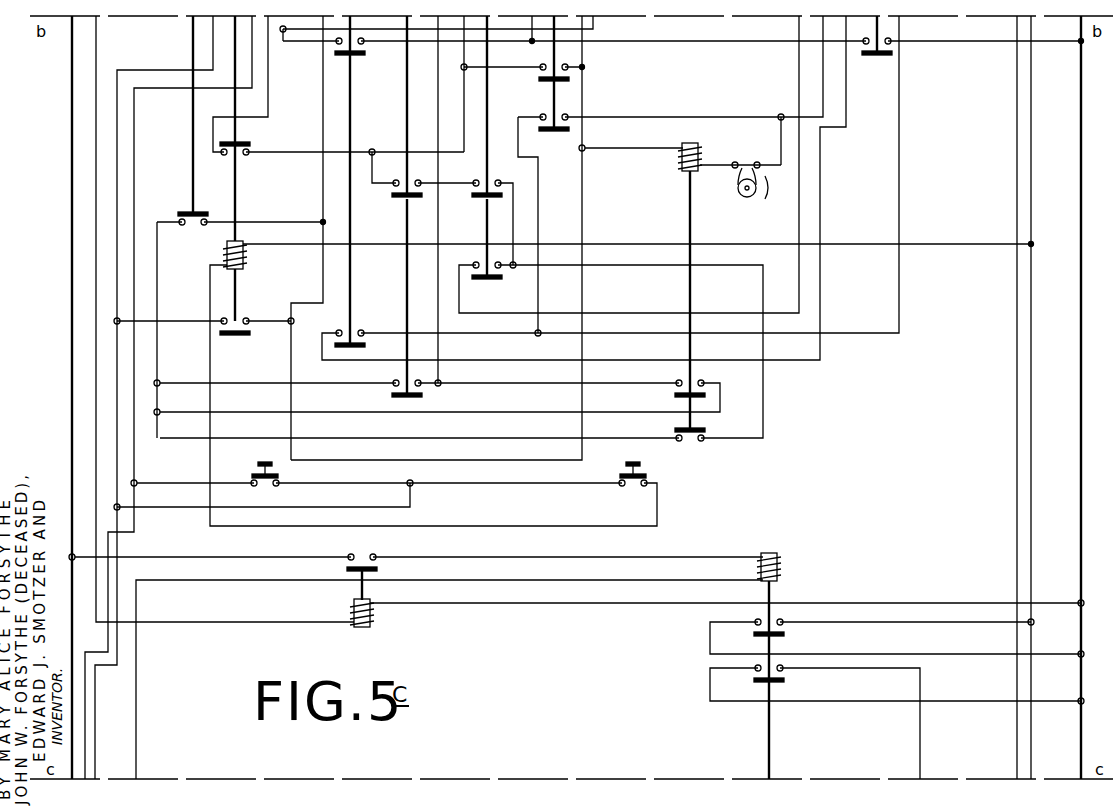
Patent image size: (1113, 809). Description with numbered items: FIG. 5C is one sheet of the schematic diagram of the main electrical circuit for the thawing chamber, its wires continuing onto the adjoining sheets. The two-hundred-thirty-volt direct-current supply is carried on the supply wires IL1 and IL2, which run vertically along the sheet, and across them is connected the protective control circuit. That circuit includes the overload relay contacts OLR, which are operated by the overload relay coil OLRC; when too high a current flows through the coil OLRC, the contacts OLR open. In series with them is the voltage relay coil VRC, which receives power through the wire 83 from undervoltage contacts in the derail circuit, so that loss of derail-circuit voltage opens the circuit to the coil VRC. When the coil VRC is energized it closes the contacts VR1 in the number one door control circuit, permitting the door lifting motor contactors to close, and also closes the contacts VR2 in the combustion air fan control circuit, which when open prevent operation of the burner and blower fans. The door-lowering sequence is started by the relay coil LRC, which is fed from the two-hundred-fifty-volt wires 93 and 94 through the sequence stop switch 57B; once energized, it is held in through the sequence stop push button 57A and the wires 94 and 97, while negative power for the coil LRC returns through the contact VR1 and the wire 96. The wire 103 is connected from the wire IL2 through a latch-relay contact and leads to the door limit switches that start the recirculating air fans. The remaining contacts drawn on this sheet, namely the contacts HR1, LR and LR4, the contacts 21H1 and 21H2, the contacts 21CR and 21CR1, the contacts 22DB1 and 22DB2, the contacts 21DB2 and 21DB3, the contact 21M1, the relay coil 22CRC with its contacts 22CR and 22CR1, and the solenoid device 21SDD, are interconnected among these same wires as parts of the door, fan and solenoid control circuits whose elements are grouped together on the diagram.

The supply wire IL2 is at (72, 182).
The supply wire IL1 is at (1081, 385).
The wire 96 is at (1031, 163).
The wire 103 is at (1017, 370).
The wire 93 is at (213, 33).
The wire 94 is at (252, 72).
The wire 83 is at (628, 580).
The wire 97 is at (186, 483).
The sequence stop push button 57A is at (246, 464).
The sequence stop switch 57B is at (652, 466).
The relay contact HR1 is at (185, 212).
The relay contact LR is at (250, 141).
The relay coil LRC is at (248, 256).
The relay contact LR4 is at (262, 340).
The relay contact 21H2 is at (367, 48).
The relay contact 21H1 is at (362, 331).
The relay contact 21CR is at (395, 199).
The relay contact 21CR1 is at (395, 381).
The relay contact 22DB1 is at (507, 190).
The relay contact 22DB2 is at (505, 274).
The relay contact 21DB2 is at (540, 67).
The relay contact 21DB3 is at (540, 117).
The relay contact 21M1 is at (876, 54).
The relay coil 22CRC is at (706, 156).
The relay contact 22CR is at (700, 385).
The relay contact 22CR1 is at (700, 436).
The solenoid 21SDD is at (760, 201).
The overload relay contacts OLR is at (366, 550).
The overload relay coil OLRC is at (352, 613).
The voltage relay coil VRC is at (777, 553).
The voltage relay contacts VR1 is at (782, 625).
The voltage relay contacts VR2 is at (782, 671).